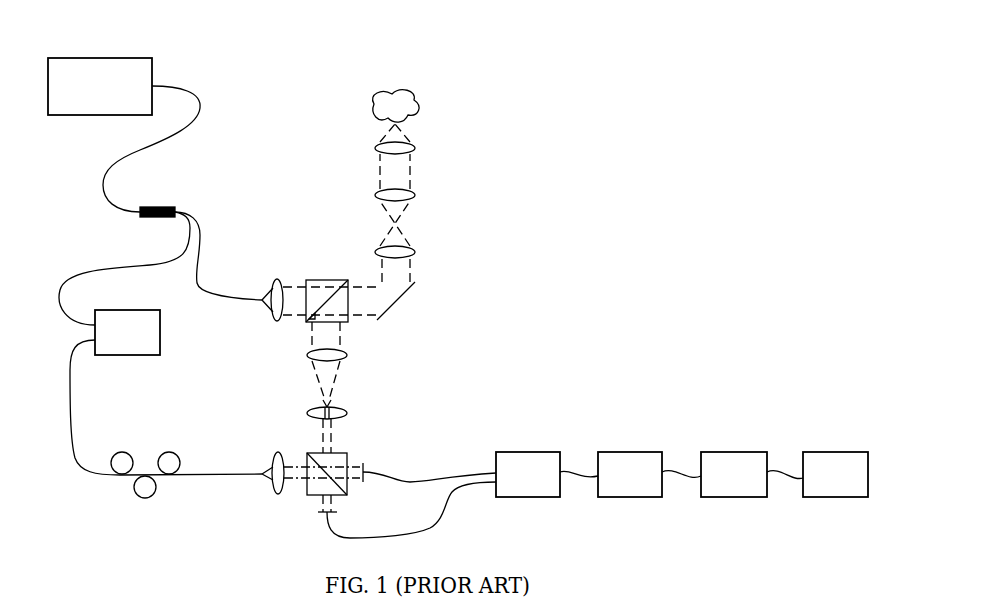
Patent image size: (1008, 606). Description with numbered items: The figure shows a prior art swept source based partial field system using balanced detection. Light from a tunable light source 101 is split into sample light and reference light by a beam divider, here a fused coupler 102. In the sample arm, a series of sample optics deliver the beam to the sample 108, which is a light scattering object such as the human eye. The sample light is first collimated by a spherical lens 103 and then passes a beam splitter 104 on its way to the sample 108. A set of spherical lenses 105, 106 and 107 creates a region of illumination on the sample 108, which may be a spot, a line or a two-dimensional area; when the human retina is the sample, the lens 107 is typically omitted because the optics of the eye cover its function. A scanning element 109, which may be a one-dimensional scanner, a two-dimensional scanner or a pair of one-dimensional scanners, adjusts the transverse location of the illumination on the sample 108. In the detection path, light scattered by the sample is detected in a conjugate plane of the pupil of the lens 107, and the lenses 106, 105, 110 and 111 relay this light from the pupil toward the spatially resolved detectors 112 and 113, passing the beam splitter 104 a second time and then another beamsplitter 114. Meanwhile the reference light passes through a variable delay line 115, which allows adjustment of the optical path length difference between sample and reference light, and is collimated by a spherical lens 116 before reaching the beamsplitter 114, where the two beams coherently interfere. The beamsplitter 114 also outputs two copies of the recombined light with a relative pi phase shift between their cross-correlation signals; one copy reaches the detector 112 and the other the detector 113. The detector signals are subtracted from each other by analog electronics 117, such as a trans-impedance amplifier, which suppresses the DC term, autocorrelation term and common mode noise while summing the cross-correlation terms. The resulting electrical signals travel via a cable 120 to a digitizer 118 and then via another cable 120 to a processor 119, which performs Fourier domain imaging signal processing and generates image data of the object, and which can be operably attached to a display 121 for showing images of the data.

The tunable light source 101 is at (103, 53).
The fused coupler 102 is at (162, 202).
The spherical lens 103 is at (273, 275).
The beam splitter 104 is at (335, 277).
The spherical lens 105 is at (417, 252).
The spherical lens 106 is at (417, 196).
The spherical lens 107 is at (417, 148).
The sample 108 is at (408, 83).
The scanning element 109 is at (398, 308).
The lens 110 is at (350, 358).
The lens 111 is at (353, 413).
The detector 112 is at (370, 483).
The detector 113 is at (318, 515).
The beamsplitter 114 is at (305, 450).
The variable delay line 115 is at (125, 362).
The spherical lens 116 is at (277, 497).
The analog electronics 117 is at (528, 443).
The digitizer 118 is at (630, 443).
The processor 119 is at (735, 443).
The cable 120 is at (587, 485).
The display 121 is at (838, 443).